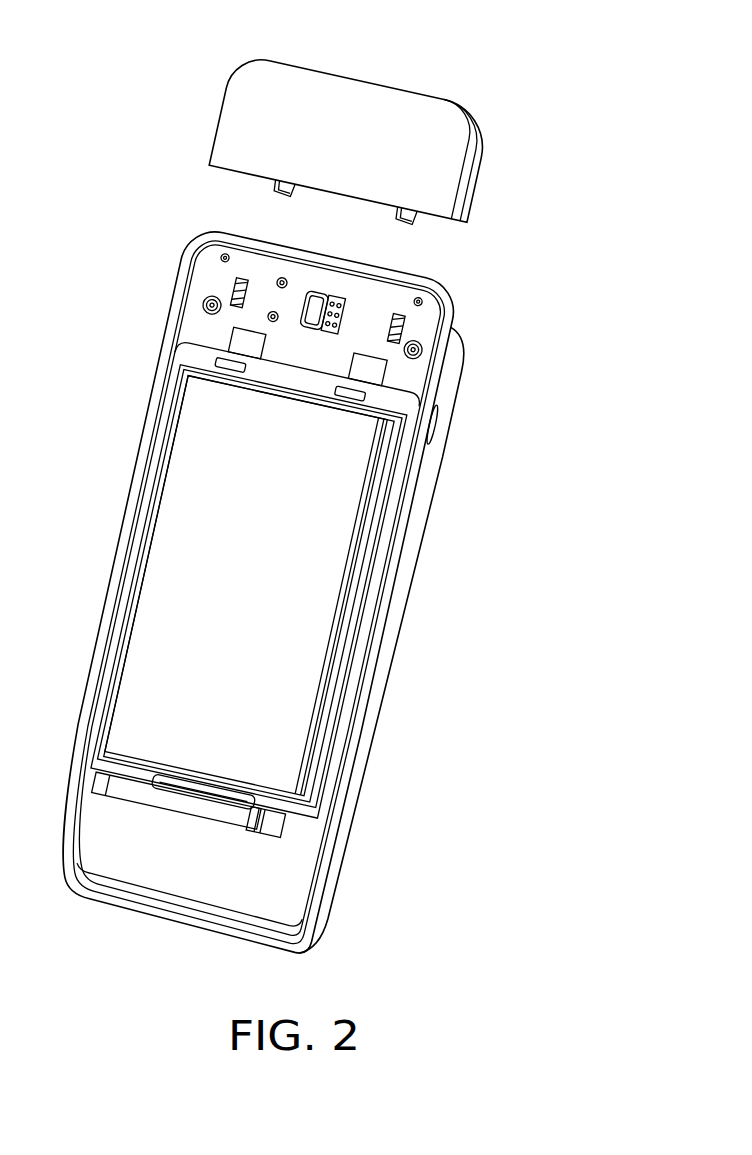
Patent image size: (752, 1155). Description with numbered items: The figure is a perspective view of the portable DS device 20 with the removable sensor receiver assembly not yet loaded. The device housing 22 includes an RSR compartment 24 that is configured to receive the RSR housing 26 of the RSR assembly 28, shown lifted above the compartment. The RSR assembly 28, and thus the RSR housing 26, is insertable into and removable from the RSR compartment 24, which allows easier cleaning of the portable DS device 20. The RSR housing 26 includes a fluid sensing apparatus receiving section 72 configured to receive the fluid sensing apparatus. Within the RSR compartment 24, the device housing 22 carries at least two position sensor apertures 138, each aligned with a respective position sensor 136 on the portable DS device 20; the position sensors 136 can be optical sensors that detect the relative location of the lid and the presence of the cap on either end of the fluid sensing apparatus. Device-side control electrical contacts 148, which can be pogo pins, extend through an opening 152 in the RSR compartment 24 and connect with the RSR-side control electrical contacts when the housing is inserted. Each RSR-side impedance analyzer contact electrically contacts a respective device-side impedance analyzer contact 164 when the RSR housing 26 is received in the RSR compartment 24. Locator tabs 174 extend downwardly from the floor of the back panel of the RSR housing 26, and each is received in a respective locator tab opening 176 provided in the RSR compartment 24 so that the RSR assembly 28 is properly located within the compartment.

The portable DS device 20 is at (488, 422).
The device housing 22 is at (404, 587).
The RSR compartment 24 is at (393, 297).
The RSR housing 26 is at (483, 127).
The RSR assembly 28 is at (394, 146).
The fluid sensing apparatus receiving section 72 is at (423, 302).
The position sensor 136 is at (233, 290).
The position sensor aperture 138 is at (244, 277).
The device-side control electrical contact 148 is at (340, 296).
The opening 152 is at (310, 292).
The device-side impedance analyzer contact 164 is at (281, 278).
The locator tab 174 is at (420, 223).
The locator tab opening 176 is at (357, 392).